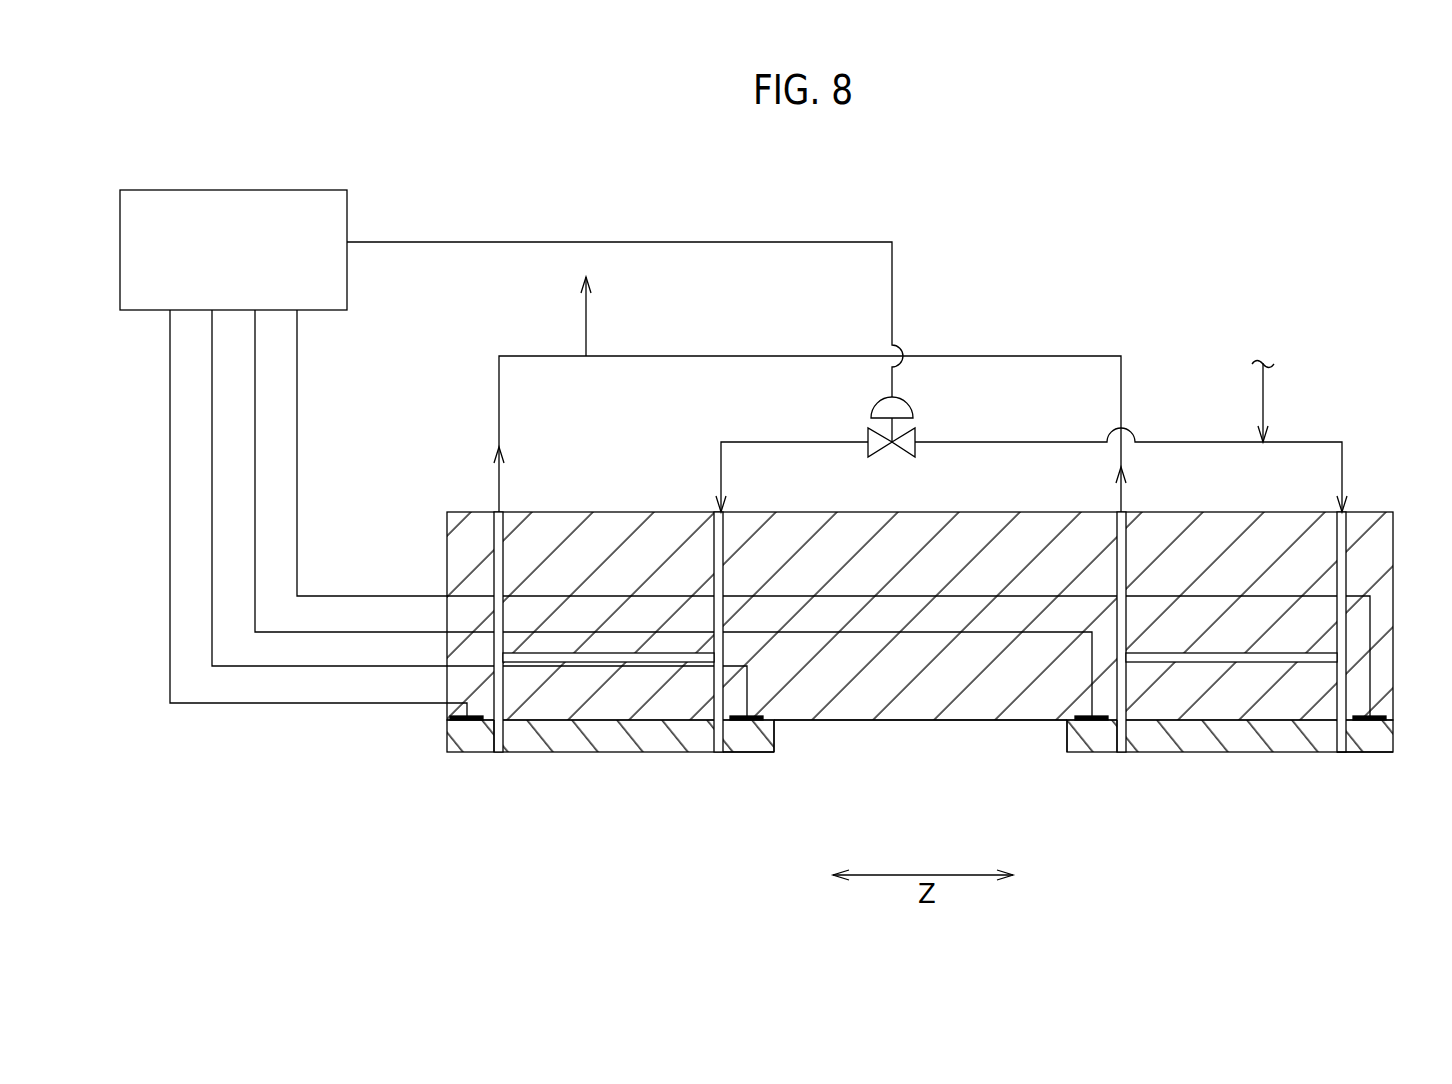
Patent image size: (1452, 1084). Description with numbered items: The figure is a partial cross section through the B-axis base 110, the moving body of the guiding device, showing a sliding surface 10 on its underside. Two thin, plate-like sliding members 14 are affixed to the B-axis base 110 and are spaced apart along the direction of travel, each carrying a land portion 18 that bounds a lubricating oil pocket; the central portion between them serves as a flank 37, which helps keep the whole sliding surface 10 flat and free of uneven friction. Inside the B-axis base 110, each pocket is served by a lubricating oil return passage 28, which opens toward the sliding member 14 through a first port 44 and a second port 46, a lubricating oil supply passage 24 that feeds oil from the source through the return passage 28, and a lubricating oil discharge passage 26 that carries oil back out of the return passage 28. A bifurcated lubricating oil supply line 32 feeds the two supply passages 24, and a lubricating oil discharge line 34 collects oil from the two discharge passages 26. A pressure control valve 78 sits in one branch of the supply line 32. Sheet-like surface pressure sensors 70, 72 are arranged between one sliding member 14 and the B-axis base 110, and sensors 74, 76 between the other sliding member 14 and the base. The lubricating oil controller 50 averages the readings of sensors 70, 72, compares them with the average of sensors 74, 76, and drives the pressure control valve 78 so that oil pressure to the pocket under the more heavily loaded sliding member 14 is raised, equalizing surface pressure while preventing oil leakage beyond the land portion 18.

The sliding surface 10 is at (1133, 815).
The sliding member 14 is at (774, 748).
The land portion 18 is at (660, 752).
The lubricating oil supply passage 24 is at (721, 577).
The lubricating oil discharge passage 26 is at (500, 572).
The lubricating oil return passage 28 is at (602, 658).
The lubricating oil supply line 32 is at (1263, 395).
The lubricating oil discharge line 34 is at (586, 322).
The flank 37 is at (910, 722).
The first port 44 is at (743, 753).
The second port 46 is at (497, 740).
The lubricating oil controller 50 is at (347, 200).
The surface pressure sensor 70 is at (460, 723).
The surface pressure sensor 72 is at (755, 712).
The surface pressure sensor 74 is at (1083, 717).
The surface pressure sensor 76 is at (1380, 713).
The pressure control valve 78 is at (918, 430).
The B-axis base 110 is at (930, 562).